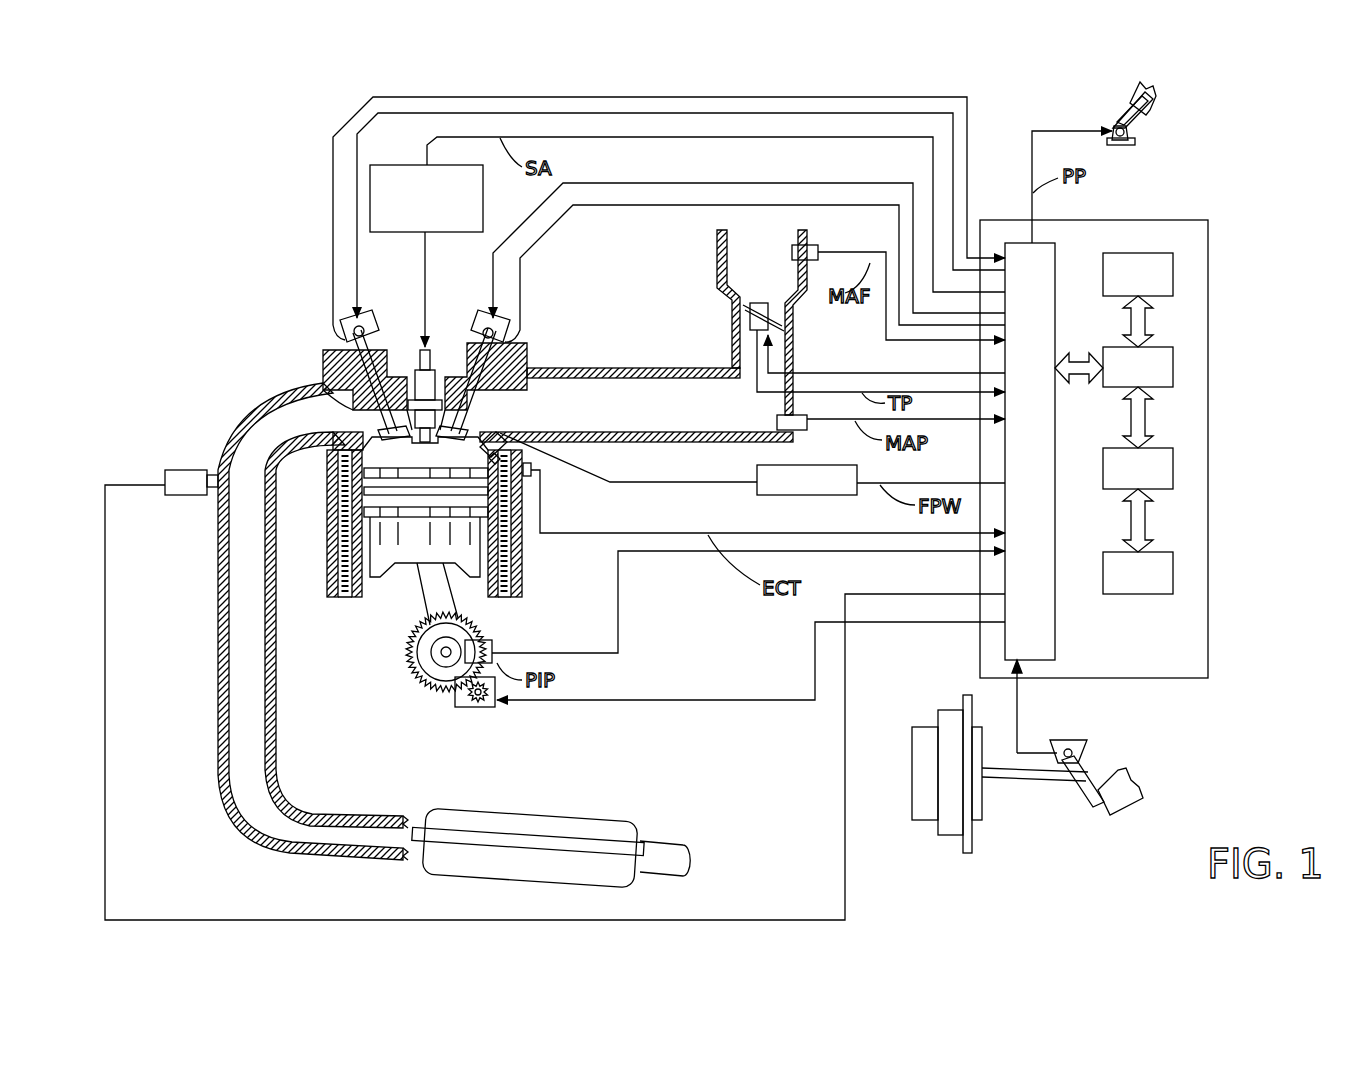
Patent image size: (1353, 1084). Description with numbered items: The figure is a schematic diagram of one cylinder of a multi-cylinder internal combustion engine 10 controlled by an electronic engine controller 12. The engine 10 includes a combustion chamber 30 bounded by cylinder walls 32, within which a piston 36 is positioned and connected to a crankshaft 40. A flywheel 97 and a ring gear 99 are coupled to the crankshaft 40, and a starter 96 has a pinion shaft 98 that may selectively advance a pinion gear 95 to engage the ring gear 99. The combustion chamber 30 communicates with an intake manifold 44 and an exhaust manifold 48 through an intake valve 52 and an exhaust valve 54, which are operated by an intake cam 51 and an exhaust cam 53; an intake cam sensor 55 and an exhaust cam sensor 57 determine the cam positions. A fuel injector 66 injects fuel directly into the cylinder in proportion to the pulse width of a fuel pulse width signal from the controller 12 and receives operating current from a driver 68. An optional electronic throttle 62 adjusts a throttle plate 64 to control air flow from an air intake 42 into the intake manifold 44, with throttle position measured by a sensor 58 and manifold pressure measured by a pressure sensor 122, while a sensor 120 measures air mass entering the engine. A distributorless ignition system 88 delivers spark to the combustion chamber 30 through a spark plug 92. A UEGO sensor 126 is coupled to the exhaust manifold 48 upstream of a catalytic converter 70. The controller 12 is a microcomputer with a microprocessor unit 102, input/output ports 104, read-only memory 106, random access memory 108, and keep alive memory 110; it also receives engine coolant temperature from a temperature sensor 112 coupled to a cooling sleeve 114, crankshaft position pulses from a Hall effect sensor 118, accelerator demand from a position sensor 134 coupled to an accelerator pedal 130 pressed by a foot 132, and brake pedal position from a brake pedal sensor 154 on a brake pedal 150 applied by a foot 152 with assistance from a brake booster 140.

The internal combustion engine 10 is at (262, 303).
The electronic engine controller 12 is at (1200, 222).
The combustion chamber 30 is at (423, 450).
The cylinder walls 32 is at (370, 590).
The piston 36 is at (408, 548).
The crankshaft 40 is at (432, 680).
The air intake 42 is at (774, 276).
The intake manifold 44 is at (709, 416).
The exhaust manifold 48 is at (304, 420).
The intake cam 51 is at (473, 305).
The intake valve 52 is at (468, 417).
The exhaust cam 53 is at (375, 305).
The exhaust valve 54 is at (375, 410).
The intake cam sensor 55 is at (500, 338).
The exhaust cam sensor 57 is at (338, 335).
The throttle position sensor 58 is at (742, 330).
The electronic throttle 62 is at (770, 308).
The throttle plate 64 is at (745, 312).
The fuel injector 66 is at (533, 447).
The driver 68 is at (778, 497).
The catalytic converter 70 is at (446, 810).
The distributorless ignition system 88 is at (385, 165).
The spark plug 92 is at (433, 350).
The pinion gear 95 is at (485, 704).
The starter 96 is at (482, 708).
The flywheel 97 is at (422, 660).
The pinion shaft 98 is at (470, 702).
The ring gear 99 is at (442, 690).
The microprocessor unit 102 is at (1173, 362).
The input/output ports 104 is at (1055, 255).
The read-only memory 106 is at (1173, 272).
The random access memory 108 is at (1173, 468).
The keep alive memory 110 is at (1173, 572).
The temperature sensor 112 is at (540, 483).
The cooling sleeve 114 is at (516, 555).
The Hall effect sensor 118 is at (495, 640).
The air mass sensor 120 is at (815, 245).
The pressure sensor 122 is at (800, 432).
The Universal Exhaust Gas Oxygen sensor 126 is at (162, 470).
The accelerator pedal 130 is at (1110, 103).
The foot 132 is at (1152, 95).
The position sensor 134 is at (1128, 131).
The brake booster 140 is at (910, 818).
The brake pedal 150 is at (1095, 803).
The foot 152 is at (1125, 775).
The brake pedal sensor 154 is at (1060, 752).